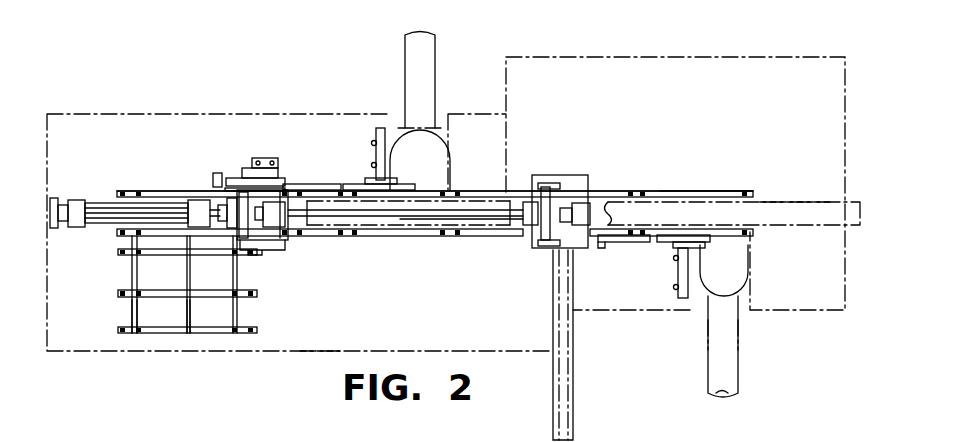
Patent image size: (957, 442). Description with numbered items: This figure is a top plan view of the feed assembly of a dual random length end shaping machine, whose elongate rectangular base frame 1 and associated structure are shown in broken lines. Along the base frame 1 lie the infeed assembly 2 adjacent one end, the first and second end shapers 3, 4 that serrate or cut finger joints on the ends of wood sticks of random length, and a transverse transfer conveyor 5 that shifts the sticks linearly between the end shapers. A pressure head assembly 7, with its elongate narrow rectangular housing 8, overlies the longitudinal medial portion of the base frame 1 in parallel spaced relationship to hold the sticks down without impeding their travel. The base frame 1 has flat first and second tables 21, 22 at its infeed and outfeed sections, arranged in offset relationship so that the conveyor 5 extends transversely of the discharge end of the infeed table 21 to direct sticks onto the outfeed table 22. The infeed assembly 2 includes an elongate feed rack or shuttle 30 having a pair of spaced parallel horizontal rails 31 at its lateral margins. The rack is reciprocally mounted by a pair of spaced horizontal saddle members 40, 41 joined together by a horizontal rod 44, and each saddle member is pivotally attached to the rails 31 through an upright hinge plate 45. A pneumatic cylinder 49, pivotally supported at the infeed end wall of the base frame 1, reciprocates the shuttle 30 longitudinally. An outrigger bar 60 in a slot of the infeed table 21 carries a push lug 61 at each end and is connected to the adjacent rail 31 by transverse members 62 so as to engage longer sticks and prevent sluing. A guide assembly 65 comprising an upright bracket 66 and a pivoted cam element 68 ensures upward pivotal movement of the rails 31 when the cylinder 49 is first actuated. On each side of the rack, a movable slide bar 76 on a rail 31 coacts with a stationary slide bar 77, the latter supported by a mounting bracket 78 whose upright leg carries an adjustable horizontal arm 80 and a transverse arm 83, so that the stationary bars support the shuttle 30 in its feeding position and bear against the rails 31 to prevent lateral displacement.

The base frame 1 is at (410, 350).
The infeed assembly 2 is at (313, 161).
The first end shaper 3 is at (450, 150).
The second end shaper 4 is at (745, 280).
The transverse transfer conveyor 5 is at (575, 410).
The pressure head assembly 7 is at (787, 202).
The housing 8 is at (868, 223).
The first table 21 is at (327, 336).
The second table 22 is at (620, 62).
The feed rack 30 is at (688, 190).
The rails 31 is at (156, 190).
The saddle member 40 is at (278, 246).
The saddle member 41 is at (530, 238).
The horizontal rod 44 is at (400, 218).
The hinge plate 45 is at (552, 185).
The pneumatic cylinder 49 is at (94, 210).
The outrigger bar 60 is at (212, 335).
The push lug 61 is at (132, 327).
The transverse member 62 is at (216, 313).
The guide assembly 65 is at (216, 170).
The upright bracket 66 is at (262, 158).
The cam element 68 is at (230, 173).
The movable slide bar 76 is at (299, 186).
The stationary slide bar 77 is at (416, 190).
The mounting bracket 78 is at (387, 157).
The horizontal arm 80 is at (376, 160).
The transverse arm 83 is at (367, 180).